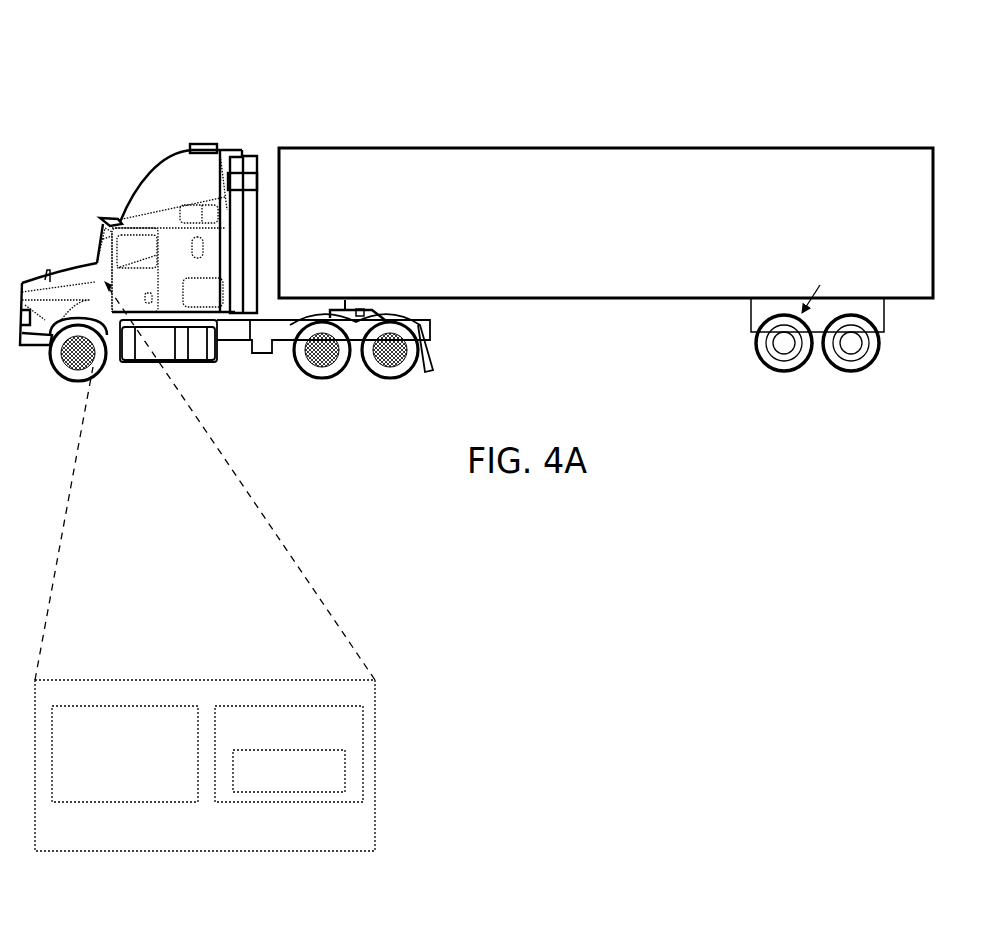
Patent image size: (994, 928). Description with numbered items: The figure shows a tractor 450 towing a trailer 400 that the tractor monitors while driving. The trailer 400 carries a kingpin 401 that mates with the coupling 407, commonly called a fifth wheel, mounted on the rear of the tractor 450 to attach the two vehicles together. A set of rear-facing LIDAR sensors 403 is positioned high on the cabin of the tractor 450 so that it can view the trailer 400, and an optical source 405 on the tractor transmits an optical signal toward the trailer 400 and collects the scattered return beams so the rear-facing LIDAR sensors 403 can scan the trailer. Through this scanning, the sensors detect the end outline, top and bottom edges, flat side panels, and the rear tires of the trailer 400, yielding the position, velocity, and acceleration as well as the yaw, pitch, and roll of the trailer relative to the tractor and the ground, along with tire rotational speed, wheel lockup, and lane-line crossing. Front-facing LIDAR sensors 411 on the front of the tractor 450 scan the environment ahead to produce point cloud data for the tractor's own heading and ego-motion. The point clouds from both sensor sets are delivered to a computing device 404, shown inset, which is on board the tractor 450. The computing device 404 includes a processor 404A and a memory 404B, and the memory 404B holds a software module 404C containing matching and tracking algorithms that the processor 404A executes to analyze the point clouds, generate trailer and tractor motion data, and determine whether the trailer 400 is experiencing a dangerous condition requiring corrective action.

The tractor 450 is at (146, 192).
The optical source 405 is at (203, 141).
The set of rear-facing LIDAR sensors 403 is at (262, 172).
The front-facing LIDAR sensors 411 is at (72, 261).
The trailer 400 is at (566, 148).
The kingpin 401 is at (348, 299).
The coupling 407 is at (360, 312).
The computing device 404 is at (205, 566).
The processor 404A is at (125, 754).
The memory 404B is at (289, 754).
The software module 404C is at (289, 771).